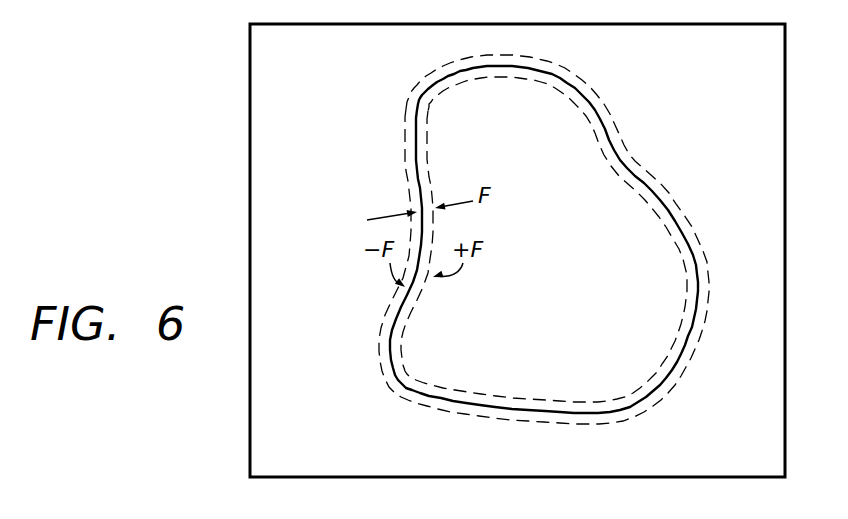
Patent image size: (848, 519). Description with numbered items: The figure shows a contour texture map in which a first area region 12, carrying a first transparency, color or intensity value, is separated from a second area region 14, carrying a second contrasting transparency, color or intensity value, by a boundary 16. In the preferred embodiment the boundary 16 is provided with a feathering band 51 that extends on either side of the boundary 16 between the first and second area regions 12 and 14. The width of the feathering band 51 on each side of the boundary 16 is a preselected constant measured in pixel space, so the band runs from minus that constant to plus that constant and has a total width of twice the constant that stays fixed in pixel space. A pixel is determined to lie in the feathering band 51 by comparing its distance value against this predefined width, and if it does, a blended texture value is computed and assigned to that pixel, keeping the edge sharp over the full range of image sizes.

The first area region 12 is at (517, 250).
The second area region 14 is at (544, 239).
The feathering band 51 is at (423, 164).
The boundary 16 is at (622, 161).